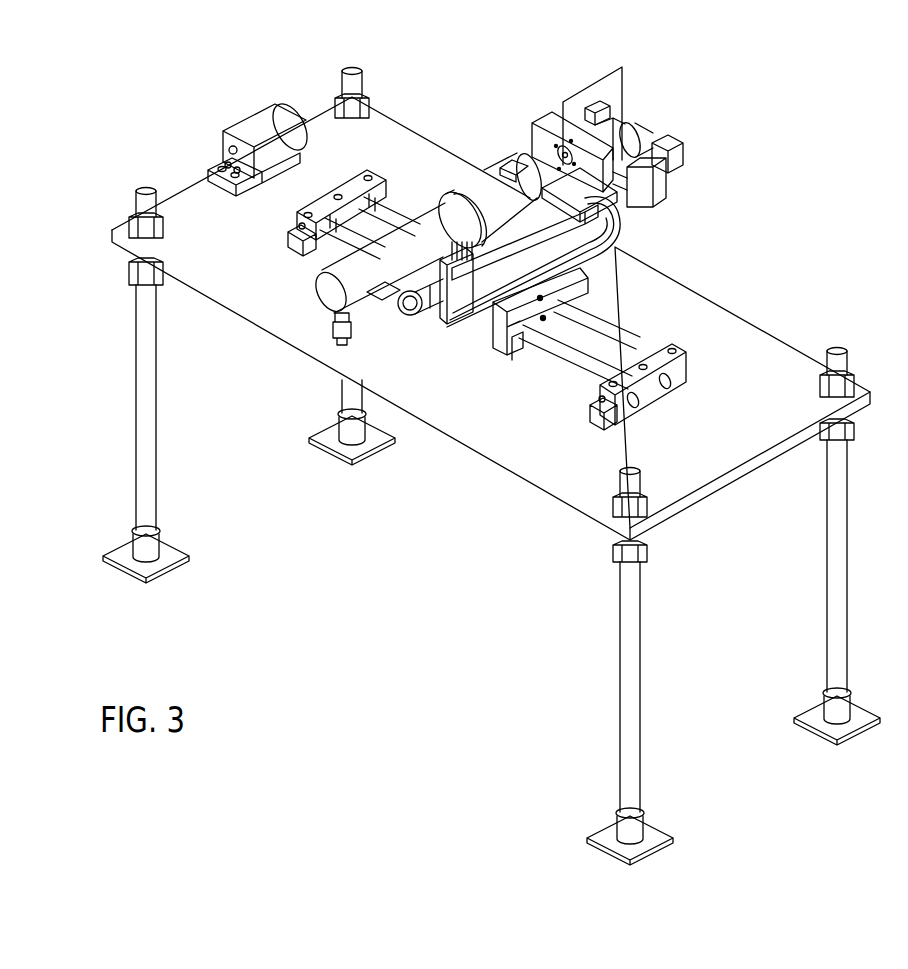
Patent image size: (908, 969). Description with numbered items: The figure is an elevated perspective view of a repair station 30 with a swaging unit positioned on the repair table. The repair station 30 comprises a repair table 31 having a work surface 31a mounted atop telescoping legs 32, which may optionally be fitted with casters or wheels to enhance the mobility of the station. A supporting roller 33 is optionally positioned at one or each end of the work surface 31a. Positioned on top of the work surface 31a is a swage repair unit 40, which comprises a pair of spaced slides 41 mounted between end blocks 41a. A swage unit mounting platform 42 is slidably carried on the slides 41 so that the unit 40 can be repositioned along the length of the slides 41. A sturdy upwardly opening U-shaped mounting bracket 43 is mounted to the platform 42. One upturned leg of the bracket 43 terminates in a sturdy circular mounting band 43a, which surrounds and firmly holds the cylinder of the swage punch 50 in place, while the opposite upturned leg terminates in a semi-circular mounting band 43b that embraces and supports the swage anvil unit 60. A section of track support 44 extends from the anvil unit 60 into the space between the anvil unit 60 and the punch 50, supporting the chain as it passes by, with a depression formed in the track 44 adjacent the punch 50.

The repair station 30 is at (803, 284).
The repair table 31 is at (476, 492).
The work surface 31a is at (562, 431).
The telescoping legs 32 is at (140, 458).
The supporting roller 33 is at (257, 117).
The swage repair unit 40 is at (674, 215).
The spaced slides 41 is at (593, 333).
The end blocks 41a is at (316, 197).
The swage unit mounting platform 42 is at (483, 340).
The mounting bracket 43 is at (548, 280).
The circular mounting band 43a is at (447, 210).
The semi-circular mounting band 43b is at (614, 139).
The track support 44 is at (584, 202).
The swage punch 50 is at (431, 189).
The swage anvil unit 60 is at (594, 84).